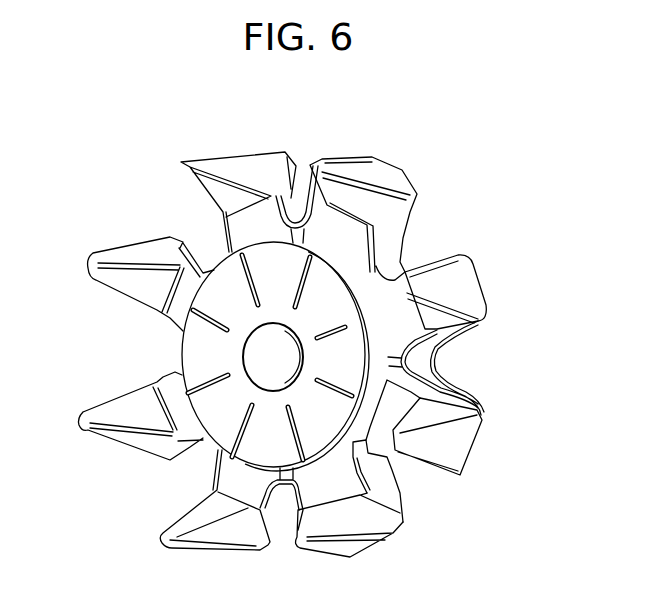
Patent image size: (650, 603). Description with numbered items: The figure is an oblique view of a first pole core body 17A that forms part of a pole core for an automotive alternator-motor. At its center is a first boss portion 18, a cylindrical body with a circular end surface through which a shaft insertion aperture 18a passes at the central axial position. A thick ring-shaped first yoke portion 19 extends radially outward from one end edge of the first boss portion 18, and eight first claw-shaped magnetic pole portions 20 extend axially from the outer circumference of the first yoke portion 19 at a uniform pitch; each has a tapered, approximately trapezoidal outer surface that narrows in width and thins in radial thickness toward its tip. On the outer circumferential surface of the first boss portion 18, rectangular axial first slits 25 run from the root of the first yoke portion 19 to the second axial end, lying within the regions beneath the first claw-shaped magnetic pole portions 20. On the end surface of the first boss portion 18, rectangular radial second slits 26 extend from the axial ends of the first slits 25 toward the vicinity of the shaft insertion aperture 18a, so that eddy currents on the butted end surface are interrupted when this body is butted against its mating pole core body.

The first pole core body 17A is at (133, 97).
The first boss portion 18 is at (200, 356).
The shaft insertion aperture 18a is at (253, 350).
The first yoke portion 19 is at (378, 240).
The first claw-shaped magnetic pole portion 20 is at (450, 283).
The first slit 25 is at (370, 396).
The second slit 26 is at (403, 372).